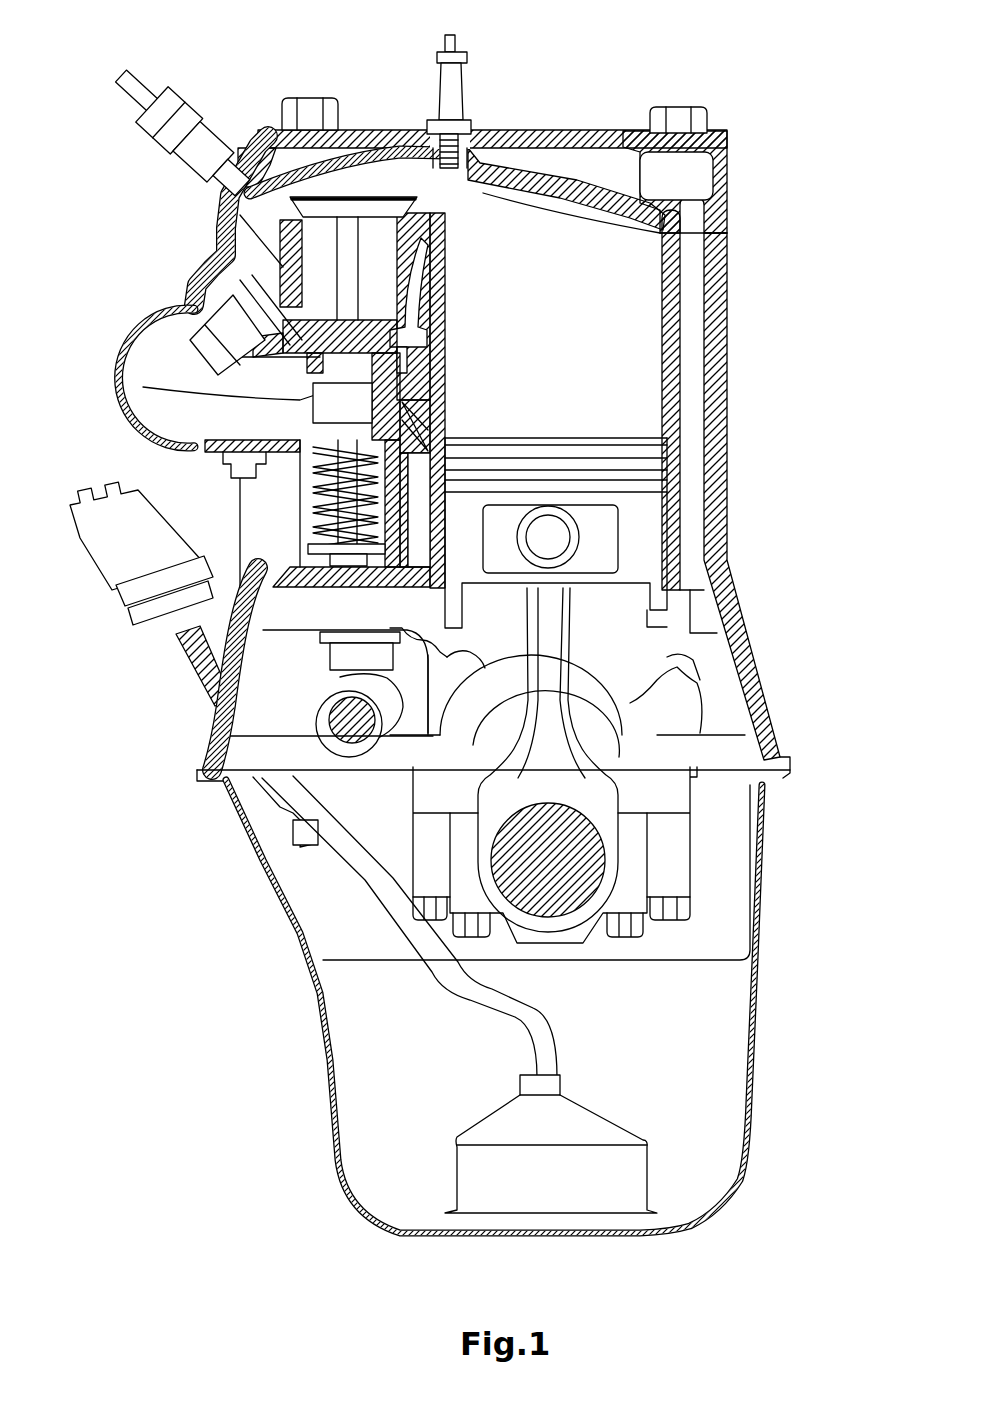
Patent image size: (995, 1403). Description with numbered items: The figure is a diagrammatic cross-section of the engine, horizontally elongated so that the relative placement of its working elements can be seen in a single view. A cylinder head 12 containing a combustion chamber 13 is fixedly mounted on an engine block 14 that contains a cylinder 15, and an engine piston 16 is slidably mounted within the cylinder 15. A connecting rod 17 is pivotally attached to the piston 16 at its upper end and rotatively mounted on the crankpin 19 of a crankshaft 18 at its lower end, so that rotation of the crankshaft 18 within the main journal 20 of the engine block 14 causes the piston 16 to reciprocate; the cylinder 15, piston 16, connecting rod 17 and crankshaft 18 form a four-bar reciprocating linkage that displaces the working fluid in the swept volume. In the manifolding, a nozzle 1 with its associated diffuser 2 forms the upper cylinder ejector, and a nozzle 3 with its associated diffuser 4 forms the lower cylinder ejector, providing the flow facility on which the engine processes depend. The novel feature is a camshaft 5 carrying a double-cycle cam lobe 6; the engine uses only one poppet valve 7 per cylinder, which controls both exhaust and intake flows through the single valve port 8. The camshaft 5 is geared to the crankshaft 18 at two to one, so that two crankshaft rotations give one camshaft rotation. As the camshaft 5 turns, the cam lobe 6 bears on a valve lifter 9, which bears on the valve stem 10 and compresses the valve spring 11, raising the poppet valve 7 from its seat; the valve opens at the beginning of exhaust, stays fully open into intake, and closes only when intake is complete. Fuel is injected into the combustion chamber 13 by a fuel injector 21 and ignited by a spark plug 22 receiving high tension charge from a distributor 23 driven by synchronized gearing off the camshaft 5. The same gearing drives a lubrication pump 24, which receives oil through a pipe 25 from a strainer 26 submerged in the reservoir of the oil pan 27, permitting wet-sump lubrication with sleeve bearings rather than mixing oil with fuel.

The nozzle 1 is at (217, 270).
The diffuser 2 is at (207, 330).
The nozzle 3 is at (300, 378).
The diffuser 4 is at (315, 415).
The camshaft 5 is at (322, 762).
The double-cycle cam lobe 6 is at (330, 745).
The poppet valve 7 is at (218, 204).
The valve port 8 is at (217, 228).
The valve lifter 9 is at (347, 689).
The valve stem 10 is at (340, 517).
The valve spring 11 is at (340, 500).
The cylinder head 12 is at (727, 165).
The combustion chamber 13 is at (663, 232).
The engine block 14 is at (726, 286).
The cylinder 15 is at (686, 323).
The engine piston 16 is at (640, 540).
The connecting rod 17 is at (690, 630).
The crankshaft 18 is at (600, 730).
The crankpin 19 is at (570, 862).
The main journal 20 is at (613, 702).
The fuel injector 21 is at (190, 86).
The spark plug 22 is at (432, 80).
The distributor 23 is at (147, 537).
The lubrication pump 24 is at (308, 850).
The pipe 25 is at (383, 908).
The strainer 26 is at (513, 1130).
The oil pan 27 is at (327, 1123).